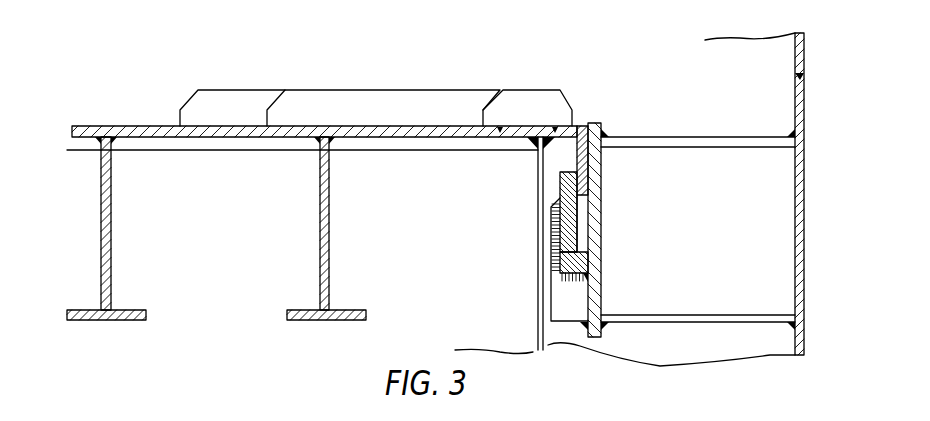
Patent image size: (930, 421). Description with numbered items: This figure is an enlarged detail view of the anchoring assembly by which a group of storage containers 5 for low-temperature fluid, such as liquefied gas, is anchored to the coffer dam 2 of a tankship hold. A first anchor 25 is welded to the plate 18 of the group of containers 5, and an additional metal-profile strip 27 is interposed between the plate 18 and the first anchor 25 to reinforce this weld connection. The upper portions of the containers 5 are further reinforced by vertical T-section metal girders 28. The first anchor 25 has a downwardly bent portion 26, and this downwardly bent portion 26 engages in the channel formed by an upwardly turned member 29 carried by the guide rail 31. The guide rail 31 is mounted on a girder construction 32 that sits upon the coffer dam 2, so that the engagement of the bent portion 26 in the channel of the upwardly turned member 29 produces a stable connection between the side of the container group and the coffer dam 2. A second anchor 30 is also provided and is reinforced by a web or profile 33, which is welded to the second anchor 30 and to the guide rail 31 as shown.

The coffer dam 2 is at (805, 155).
The containers 5 is at (440, 247).
The plate 18 is at (375, 125).
The first anchor 25 is at (572, 112).
The downwardly bent portion 26 is at (583, 163).
The metal-profile strip 27 is at (525, 102).
The vertical T-section metal girders 28 is at (320, 251).
The upwardly turned member 29 is at (560, 188).
The second anchor 30 is at (560, 262).
The guide rail 31 is at (588, 265).
The girder construction 32 is at (747, 231).
The web or profile 33 is at (560, 308).